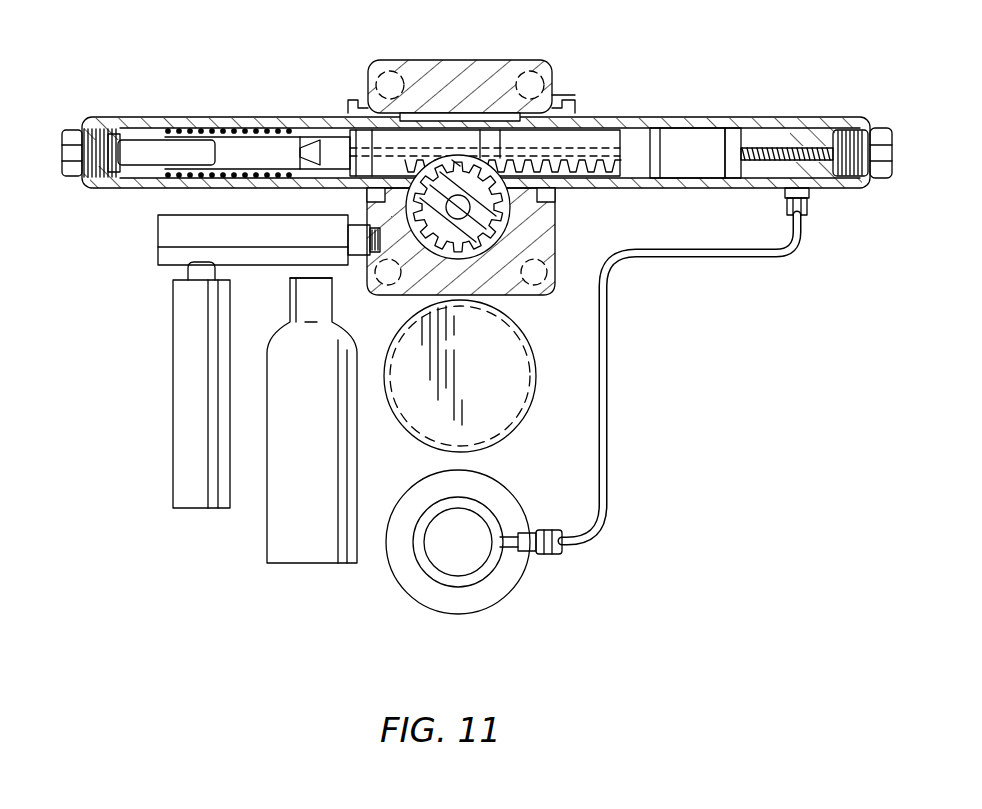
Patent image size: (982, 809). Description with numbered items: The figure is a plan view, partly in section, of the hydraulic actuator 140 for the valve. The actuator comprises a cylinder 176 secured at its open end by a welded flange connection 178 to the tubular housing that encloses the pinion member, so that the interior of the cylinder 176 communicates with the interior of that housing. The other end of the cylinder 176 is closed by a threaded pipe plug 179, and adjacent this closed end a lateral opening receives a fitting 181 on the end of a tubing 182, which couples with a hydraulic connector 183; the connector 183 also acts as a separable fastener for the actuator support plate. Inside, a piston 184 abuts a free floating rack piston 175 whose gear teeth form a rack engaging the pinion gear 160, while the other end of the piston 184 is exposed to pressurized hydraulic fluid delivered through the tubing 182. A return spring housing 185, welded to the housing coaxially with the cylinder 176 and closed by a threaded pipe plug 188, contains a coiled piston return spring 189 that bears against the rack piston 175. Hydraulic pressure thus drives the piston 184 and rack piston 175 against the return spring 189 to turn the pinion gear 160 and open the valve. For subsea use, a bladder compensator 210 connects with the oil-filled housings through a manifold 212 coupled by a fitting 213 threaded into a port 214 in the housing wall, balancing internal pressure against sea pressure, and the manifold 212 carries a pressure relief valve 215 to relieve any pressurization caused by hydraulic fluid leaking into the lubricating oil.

The hydraulic actuator 140 is at (193, 80).
The threaded pipe plug 188 is at (62, 140).
The coiled piston return spring 189 is at (198, 128).
The return spring housing 185 is at (138, 188).
The free floating rack piston 175 is at (423, 137).
The welded flange connection 178 is at (556, 96).
The piston 184 is at (703, 138).
The cylinder 176 is at (812, 112).
The threaded pipe plug 179 is at (886, 182).
The fitting 181 is at (808, 212).
The pinion gear 160 is at (518, 220).
The tubing 182 is at (610, 400).
The hydraulic connector 183 is at (400, 596).
The port 214 is at (370, 228).
The manifold 212 is at (170, 250).
The fitting 213 is at (358, 268).
The pressure relief valve 215 is at (186, 462).
The bladder compensator 210 is at (292, 556).